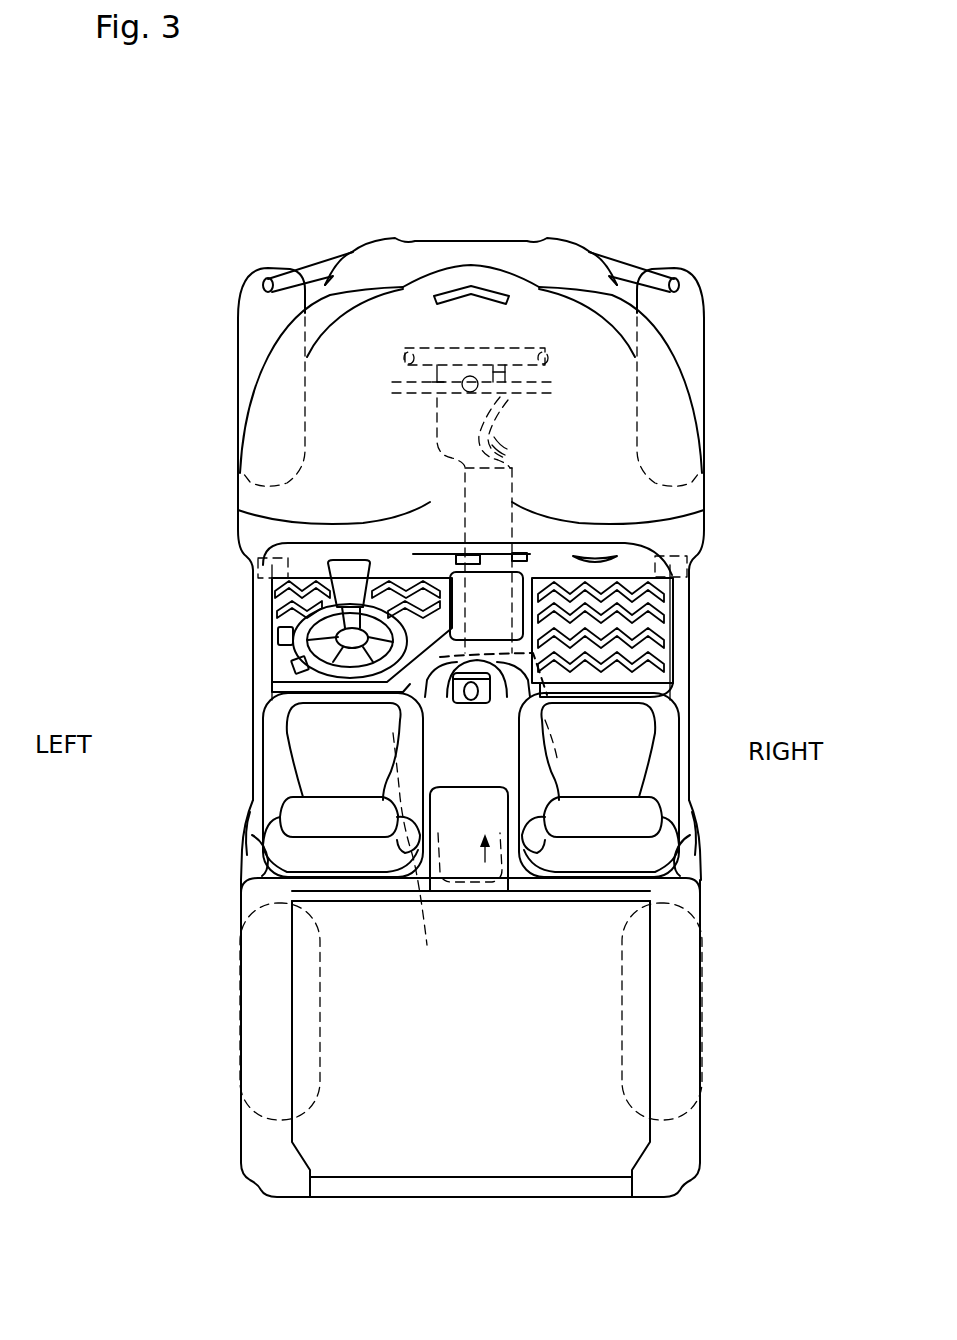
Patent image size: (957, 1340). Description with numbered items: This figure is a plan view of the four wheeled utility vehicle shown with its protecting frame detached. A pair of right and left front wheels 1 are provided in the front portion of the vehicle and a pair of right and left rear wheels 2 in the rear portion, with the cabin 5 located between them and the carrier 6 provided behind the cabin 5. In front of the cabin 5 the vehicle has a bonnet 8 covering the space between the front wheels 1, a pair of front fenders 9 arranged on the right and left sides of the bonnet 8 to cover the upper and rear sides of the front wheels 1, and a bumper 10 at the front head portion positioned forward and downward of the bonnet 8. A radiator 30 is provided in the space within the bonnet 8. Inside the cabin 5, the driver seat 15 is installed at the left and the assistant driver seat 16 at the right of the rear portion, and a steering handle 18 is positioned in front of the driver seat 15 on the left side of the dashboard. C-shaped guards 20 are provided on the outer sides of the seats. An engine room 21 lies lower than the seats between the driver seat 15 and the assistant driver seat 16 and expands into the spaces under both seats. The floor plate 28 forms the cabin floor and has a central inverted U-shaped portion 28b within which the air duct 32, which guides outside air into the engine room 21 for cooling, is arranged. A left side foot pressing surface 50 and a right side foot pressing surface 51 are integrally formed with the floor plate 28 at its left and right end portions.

The front wheels 1 is at (237, 350).
The rear wheels 2 is at (257, 1065).
The cabin 5 is at (280, 834).
The carrier 6 is at (468, 1147).
The bonnet 8 is at (297, 522).
The front fenders 9 is at (270, 507).
The bumper 10 is at (357, 266).
The driver seat 15 is at (338, 780).
The assistant driver seat 16 is at (592, 777).
The steering handle 18 is at (275, 663).
The C-shaped guards 20 is at (421, 857).
The engine room 21 is at (493, 862).
The floor plate 28 is at (275, 613).
The inverted U-shaped portion 28b is at (490, 595).
The radiator 30 is at (397, 362).
The air duct 32 is at (520, 510).
The left side foot pressing surface 50 is at (260, 560).
The right side foot pressing surface 51 is at (688, 563).